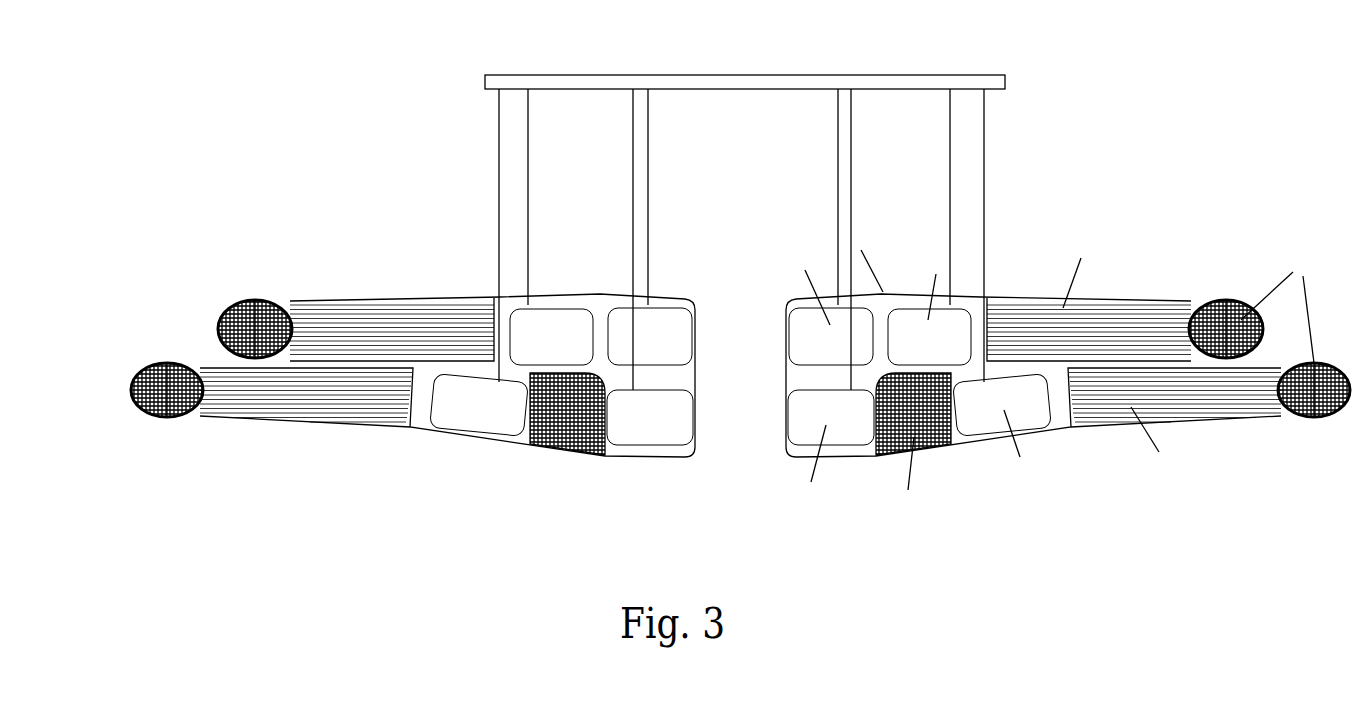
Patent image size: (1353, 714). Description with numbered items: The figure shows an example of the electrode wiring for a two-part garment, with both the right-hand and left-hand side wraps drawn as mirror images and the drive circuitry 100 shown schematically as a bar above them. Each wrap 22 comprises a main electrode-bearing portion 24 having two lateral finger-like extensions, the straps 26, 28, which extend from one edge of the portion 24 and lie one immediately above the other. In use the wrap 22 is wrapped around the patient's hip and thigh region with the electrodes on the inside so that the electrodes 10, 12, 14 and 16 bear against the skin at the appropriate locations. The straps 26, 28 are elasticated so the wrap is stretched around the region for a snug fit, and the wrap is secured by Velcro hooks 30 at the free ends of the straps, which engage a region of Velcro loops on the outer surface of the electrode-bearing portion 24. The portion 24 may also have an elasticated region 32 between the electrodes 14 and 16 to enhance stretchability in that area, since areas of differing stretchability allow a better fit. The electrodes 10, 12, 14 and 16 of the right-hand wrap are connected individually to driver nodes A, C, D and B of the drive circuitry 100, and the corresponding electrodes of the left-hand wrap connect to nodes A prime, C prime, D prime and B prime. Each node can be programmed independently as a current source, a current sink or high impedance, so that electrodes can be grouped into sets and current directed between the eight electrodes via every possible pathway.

The electrode 10 is at (651, 325).
The electrode 12 is at (553, 320).
The electrode 14 is at (477, 410).
The electrode 16 is at (655, 425).
The wrap 22 is at (598, 292).
The electrode-bearing portion 24 is at (813, 375).
The strap 26 is at (418, 308).
The strap 28 is at (350, 407).
The Velcro hooks 30 is at (167, 363).
The elasticated region 32 is at (567, 437).
The drive circuitry 100 is at (737, 84).